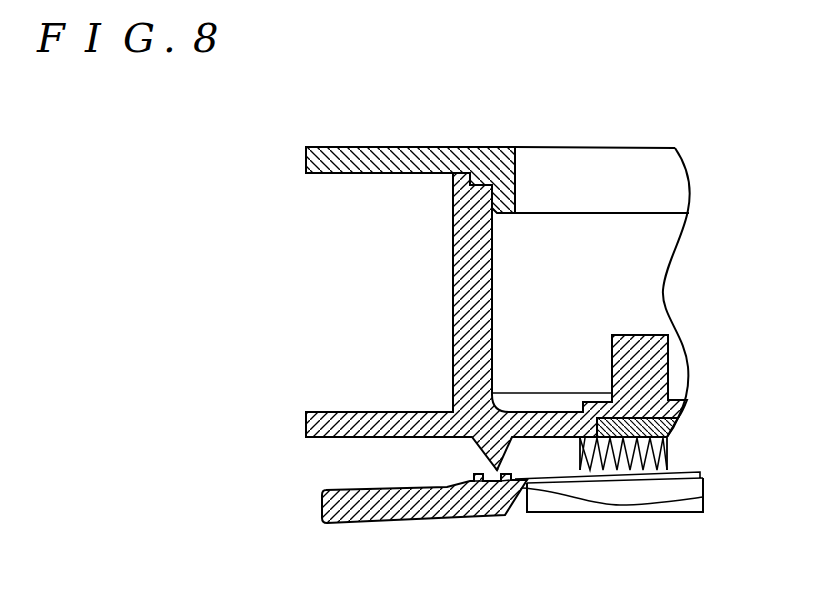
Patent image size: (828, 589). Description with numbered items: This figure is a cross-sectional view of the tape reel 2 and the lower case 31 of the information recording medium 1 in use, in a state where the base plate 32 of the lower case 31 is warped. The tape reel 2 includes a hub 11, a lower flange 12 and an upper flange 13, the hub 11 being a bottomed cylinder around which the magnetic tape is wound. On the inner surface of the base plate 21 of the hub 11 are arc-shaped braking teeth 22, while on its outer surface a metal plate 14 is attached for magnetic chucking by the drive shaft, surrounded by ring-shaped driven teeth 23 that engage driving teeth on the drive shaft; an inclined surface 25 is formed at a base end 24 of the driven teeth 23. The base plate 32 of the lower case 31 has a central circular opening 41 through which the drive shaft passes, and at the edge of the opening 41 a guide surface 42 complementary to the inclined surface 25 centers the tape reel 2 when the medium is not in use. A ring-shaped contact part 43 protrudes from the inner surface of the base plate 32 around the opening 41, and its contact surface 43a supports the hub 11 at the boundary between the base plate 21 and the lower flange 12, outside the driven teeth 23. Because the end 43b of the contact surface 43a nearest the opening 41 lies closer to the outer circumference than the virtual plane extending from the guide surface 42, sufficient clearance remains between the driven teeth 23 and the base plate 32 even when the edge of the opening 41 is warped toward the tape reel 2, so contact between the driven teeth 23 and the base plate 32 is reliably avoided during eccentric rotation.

The information recording medium 1 is at (492, 107).
The tape reel 2 is at (360, 287).
The hub 11 is at (490, 275).
The lower flange 12 is at (306, 421).
The upper flange 13 is at (306, 157).
The metal plate 14 is at (670, 427).
The base plate 21 is at (568, 417).
The braking teeth 22 is at (650, 361).
The driven teeth 23 is at (678, 455).
The base end 24 is at (496, 468).
The inclined surface 25 is at (472, 452).
The lower case 31 is at (278, 511).
The base plate 32 is at (330, 524).
The opening 41 is at (598, 515).
The guide surface 42 is at (703, 497).
The contact part 43 is at (447, 524).
The contact surface 43a is at (474, 474).
The end 43b is at (500, 464).